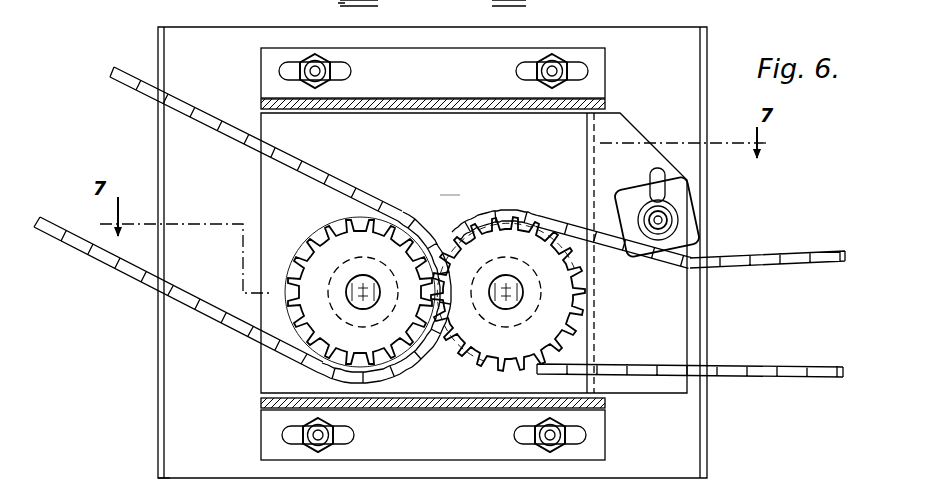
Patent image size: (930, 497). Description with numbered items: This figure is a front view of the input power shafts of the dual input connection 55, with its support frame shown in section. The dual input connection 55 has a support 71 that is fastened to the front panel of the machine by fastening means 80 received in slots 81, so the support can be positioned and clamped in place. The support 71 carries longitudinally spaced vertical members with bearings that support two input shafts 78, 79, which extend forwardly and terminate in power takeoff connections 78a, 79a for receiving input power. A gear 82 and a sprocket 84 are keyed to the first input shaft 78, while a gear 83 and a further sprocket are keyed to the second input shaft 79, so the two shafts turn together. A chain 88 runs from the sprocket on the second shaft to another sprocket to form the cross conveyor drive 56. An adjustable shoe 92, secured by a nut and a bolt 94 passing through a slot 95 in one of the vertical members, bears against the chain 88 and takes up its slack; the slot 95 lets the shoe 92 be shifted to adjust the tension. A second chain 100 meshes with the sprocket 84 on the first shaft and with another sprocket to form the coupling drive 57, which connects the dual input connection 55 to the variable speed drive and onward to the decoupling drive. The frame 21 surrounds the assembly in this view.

The frame 21 is at (159, 487).
The dual input connection 55 is at (450, 190).
The cross conveyor drive 56 is at (767, 380).
The coupling drive 57 is at (84, 263).
The support 71 is at (607, 92).
The input shaft 78 is at (373, 278).
The power takeoff connection 78a is at (329, 5).
The input shaft 79 is at (505, 278).
The power takeoff connection 79a is at (478, 5).
The fastening means 80 is at (558, 62).
The slots 81 is at (585, 72).
The gear 82 is at (300, 338).
The gear 83 is at (590, 330).
The sprocket 84 is at (332, 222).
The chain 88 is at (745, 258).
The adjustable shoe 92 is at (677, 205).
The bolt 94 is at (666, 224).
The slot 95 is at (648, 172).
The chain 100 is at (150, 284).